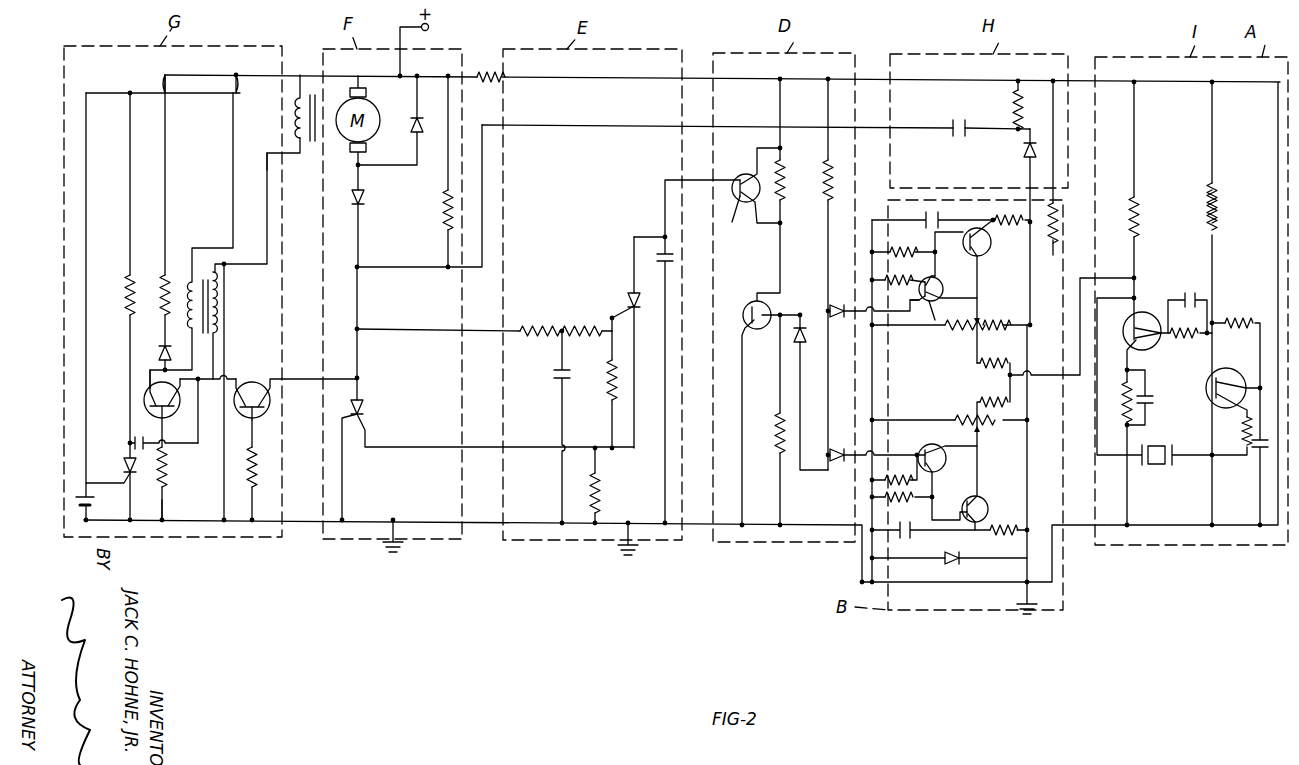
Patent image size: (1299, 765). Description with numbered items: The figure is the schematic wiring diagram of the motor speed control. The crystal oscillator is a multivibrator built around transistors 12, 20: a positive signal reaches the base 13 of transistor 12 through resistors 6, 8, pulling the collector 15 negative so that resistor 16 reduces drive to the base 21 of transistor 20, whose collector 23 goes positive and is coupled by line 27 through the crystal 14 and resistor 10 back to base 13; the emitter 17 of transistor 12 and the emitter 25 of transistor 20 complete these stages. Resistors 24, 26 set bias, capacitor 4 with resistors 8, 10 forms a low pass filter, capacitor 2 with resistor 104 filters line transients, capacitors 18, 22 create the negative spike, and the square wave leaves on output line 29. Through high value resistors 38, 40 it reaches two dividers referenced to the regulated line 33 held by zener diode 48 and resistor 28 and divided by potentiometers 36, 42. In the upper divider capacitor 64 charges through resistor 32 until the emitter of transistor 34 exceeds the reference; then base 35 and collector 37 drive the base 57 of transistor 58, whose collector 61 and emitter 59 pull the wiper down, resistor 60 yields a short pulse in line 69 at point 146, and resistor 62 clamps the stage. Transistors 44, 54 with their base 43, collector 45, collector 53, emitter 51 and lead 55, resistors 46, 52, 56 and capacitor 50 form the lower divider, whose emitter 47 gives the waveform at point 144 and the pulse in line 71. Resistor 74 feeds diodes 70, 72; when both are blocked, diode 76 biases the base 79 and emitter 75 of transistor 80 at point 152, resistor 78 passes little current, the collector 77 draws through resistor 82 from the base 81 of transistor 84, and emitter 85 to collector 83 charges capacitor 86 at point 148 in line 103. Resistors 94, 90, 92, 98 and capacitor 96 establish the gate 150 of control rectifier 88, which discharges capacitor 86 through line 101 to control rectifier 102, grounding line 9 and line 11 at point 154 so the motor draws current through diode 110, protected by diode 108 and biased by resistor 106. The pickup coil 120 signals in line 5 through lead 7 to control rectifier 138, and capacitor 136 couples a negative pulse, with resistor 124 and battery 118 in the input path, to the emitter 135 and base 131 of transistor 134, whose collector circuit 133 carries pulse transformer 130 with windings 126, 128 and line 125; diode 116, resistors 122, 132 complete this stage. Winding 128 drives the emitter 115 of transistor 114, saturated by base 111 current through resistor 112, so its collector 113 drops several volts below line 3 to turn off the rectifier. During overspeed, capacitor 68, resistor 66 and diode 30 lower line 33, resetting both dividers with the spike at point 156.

The capacitor 2 is at (1278, 128).
The line 3 is at (288, 522).
The capacitor 4 is at (1258, 455).
The line 5 is at (180, 93).
The resistor 6 is at (1214, 215).
The transformer lead 7 is at (267, 160).
The resistor 8 is at (1238, 322).
The line 9 is at (357, 318).
The resistor 10 is at (1244, 432).
The conductor 11 is at (410, 332).
The transistor 12 is at (1215, 386).
The base 13 is at (1248, 370).
The crystal 14 is at (1155, 472).
The collector 15 is at (1222, 375).
The resistor 16 is at (1196, 332).
The transistor emitter 17 is at (1230, 408).
The capacitor 18 is at (1192, 300).
The transistor 20 is at (1122, 330).
The base 21 is at (1160, 340).
The capacitor 22 is at (1148, 405).
The collector 23 is at (1145, 318).
The resistor 24 is at (1150, 390).
The transistor base 25 is at (1148, 348).
The resistor 26 is at (1136, 232).
The line 27 is at (1126, 388).
The resistor 28 is at (1053, 228).
The output line 29 is at (1092, 278).
The diode 30 is at (1024, 150).
The resistor 32 is at (1010, 218).
The line 33 is at (1050, 178).
The transistor 34 is at (983, 252).
The base 35 is at (968, 250).
The potentiometer 36 is at (992, 328).
The collector 37 is at (972, 228).
The resistor 38 is at (982, 368).
The resistor 40 is at (1000, 400).
The potentiometer 42 is at (998, 430).
The transistor 43 is at (980, 497).
The transistor 44 is at (988, 504).
The transistor base 45 is at (972, 530).
The resistor 46 is at (1005, 532).
The emitter 47 is at (984, 514).
The zener diode 48 is at (940, 562).
The capacitor 50 is at (900, 538).
The transistor emitter 51 is at (945, 495).
The resistor 52 is at (900, 531).
The transistor 53 is at (952, 446).
The transistor 54 is at (944, 465).
The resistor 55 is at (924, 450).
The resistor 56 is at (872, 497).
The base 57 is at (960, 293).
The transistor 58 is at (966, 278).
The emitter 59 is at (928, 305).
The resistor 60 is at (872, 280).
The collector 61 is at (940, 310).
The resistor 62 is at (905, 248).
The capacitor 64 is at (930, 212).
The resistor 66 is at (1016, 106).
The capacitor 68 is at (953, 128).
The line 69 is at (858, 314).
The diode 70 is at (836, 303).
The line 71 is at (855, 452).
The diode 72 is at (838, 462).
The resistor 74 is at (826, 190).
The emitter 75 is at (745, 332).
The diode 76 is at (795, 342).
The collector 77 is at (748, 322).
The resistor 78 is at (778, 420).
The base 79 is at (768, 320).
The transistor 80 is at (757, 295).
The base 81 is at (748, 196).
The resistor 82 is at (782, 180).
The collector 83 is at (735, 219).
The transistor 84 is at (740, 174).
The emitter 85 is at (752, 176).
The capacitor 86 is at (657, 257).
The control rectifier 88 is at (630, 292).
The resistor 90 is at (592, 330).
The resistor 92 is at (608, 395).
The resistor 94 is at (538, 330).
The capacitor 96 is at (558, 380).
The resistor 98 is at (597, 495).
The line 101 is at (380, 447).
The control rectifier 102 is at (364, 410).
The line 103 is at (640, 237).
The resistor 104 is at (492, 74).
The resistor 106 is at (446, 215).
The diode 108 is at (412, 130).
The diode 110 is at (365, 196).
The transistor base 111 is at (262, 410).
The resistor 112 is at (256, 468).
The collector 113 is at (270, 382).
The transistor 114 is at (254, 378).
The emitter 115 is at (244, 412).
The diode 116 is at (160, 352).
The battery 118 is at (110, 498).
The pickup coil 120 is at (305, 100).
The resistor 122 is at (165, 270).
The resistor 124 is at (130, 268).
The line 125 is at (220, 360).
The winding 126 is at (192, 282).
The winding 128 is at (216, 270).
The pulse transformer 130 is at (208, 335).
The transistor base 131 is at (150, 406).
The resistor 132 is at (158, 510).
The collector circuit 133 is at (148, 392).
The transistor 134 is at (164, 430).
The emitter 135 is at (182, 400).
The capacitor 136 is at (135, 437).
The control rectifier 138 is at (126, 468).
The point 144 is at (980, 532).
The point 146 is at (985, 228).
The point 148 is at (665, 232).
The gate 150 is at (612, 316).
The point 152 is at (795, 305).
The point 154 is at (357, 378).
The point 156 is at (1040, 140).